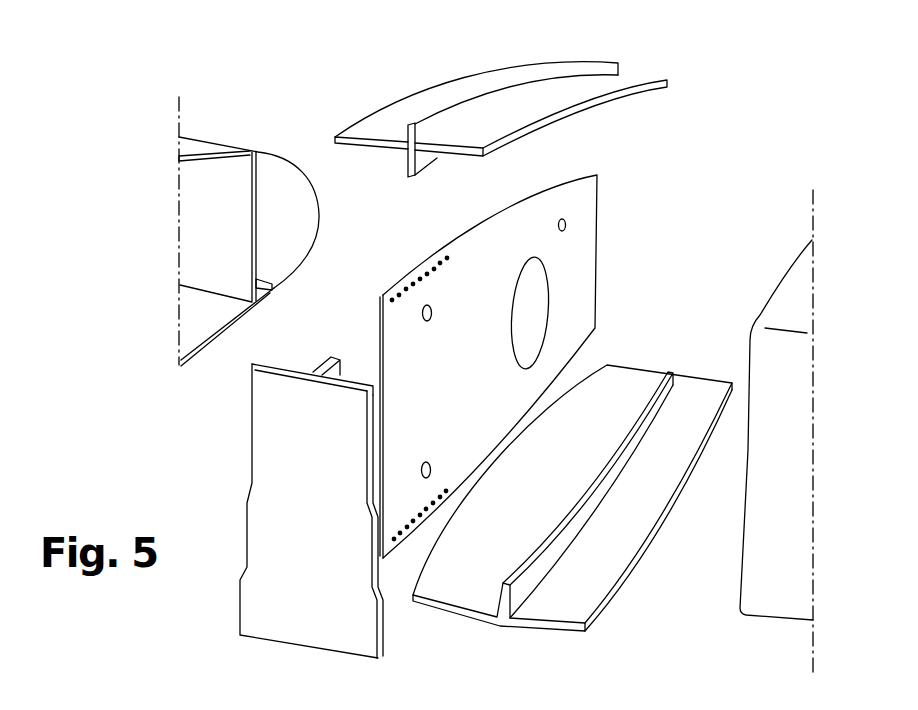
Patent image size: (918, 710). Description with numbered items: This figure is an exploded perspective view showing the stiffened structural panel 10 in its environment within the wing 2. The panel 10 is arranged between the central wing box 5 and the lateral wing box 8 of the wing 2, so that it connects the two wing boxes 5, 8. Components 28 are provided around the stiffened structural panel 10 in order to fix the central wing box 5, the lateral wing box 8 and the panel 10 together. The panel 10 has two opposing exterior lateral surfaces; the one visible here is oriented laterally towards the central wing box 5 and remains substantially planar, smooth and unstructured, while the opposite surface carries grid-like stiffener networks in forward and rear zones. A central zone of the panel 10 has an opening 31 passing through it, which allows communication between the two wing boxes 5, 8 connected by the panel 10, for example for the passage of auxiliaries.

The wing 2 is at (223, 143).
The lateral wing box 8 is at (218, 220).
The components 28 is at (655, 53).
The stiffened structural panel 10 is at (583, 253).
The opening 31 is at (530, 316).
The central wing box 5 is at (778, 547).